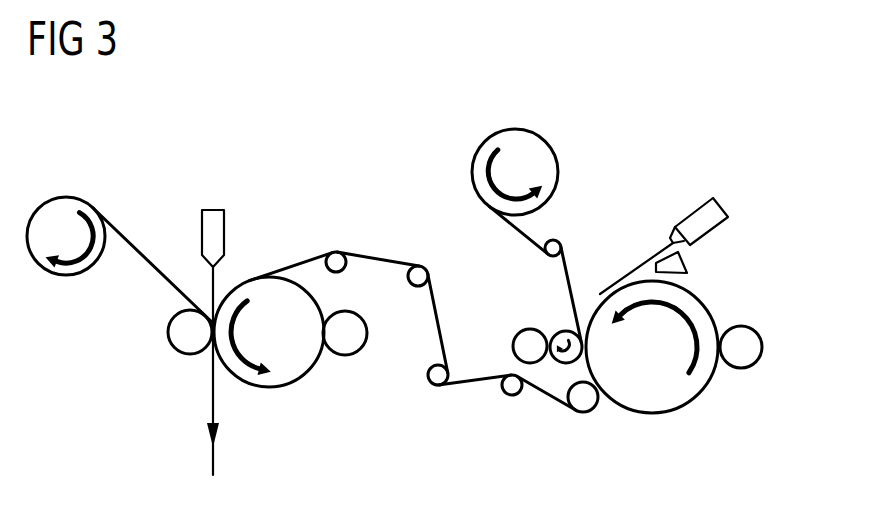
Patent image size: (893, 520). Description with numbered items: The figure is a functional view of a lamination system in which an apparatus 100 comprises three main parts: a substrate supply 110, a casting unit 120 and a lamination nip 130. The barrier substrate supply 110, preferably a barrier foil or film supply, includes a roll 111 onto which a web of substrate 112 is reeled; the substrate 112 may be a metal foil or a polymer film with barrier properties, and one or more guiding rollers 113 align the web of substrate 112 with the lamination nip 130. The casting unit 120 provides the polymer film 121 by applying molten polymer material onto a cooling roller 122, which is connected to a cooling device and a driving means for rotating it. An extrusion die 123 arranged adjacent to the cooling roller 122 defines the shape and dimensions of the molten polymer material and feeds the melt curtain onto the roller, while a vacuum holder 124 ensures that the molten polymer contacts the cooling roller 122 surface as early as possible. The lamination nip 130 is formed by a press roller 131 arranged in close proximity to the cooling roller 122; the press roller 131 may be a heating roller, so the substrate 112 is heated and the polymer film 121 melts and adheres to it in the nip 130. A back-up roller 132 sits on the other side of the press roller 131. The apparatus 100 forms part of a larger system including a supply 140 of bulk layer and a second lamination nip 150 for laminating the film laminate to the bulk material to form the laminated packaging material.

The apparatus 100 is at (668, 122).
The substrate supply 110 is at (542, 158).
The roll 111 is at (515, 128).
The web of substrate 112 is at (530, 222).
The guiding rollers 113 is at (545, 248).
The casting unit 120 is at (722, 300).
The polymer film 121 is at (587, 307).
The cooling roller 122 is at (685, 392).
The extrusion die 123 is at (697, 223).
The vacuum holder 124 is at (687, 262).
The lamination nip 130 is at (563, 378).
The press roller 131 is at (558, 331).
The back-up roller 132 is at (513, 347).
The supply of bulk layer 140 is at (68, 211).
The second lamination nip 150 is at (245, 255).